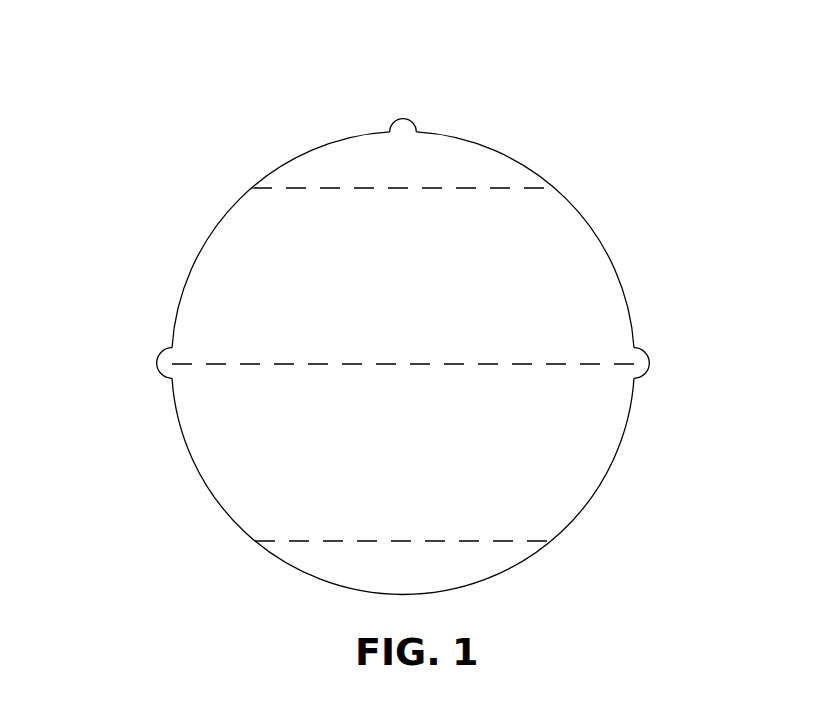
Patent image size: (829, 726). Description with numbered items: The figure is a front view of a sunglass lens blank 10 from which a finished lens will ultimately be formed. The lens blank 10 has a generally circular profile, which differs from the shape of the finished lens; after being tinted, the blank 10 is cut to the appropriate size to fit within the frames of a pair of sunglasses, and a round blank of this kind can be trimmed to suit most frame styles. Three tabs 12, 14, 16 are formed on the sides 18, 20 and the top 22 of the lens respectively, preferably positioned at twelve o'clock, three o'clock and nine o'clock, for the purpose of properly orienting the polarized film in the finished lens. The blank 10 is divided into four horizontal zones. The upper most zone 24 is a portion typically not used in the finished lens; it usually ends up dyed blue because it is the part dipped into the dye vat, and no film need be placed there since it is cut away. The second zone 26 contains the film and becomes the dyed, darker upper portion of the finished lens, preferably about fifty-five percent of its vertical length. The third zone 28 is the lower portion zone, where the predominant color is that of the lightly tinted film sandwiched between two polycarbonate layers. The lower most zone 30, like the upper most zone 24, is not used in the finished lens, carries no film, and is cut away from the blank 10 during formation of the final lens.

The sunglass lens blank 10 is at (660, 190).
The tab 12 is at (153, 375).
The tab 14 is at (390, 123).
The tab 16 is at (655, 350).
The side 18 is at (138, 327).
The side 20 is at (680, 378).
The top 22 is at (468, 125).
The upper most zone 24 is at (426, 171).
The second zone 26 is at (424, 284).
The third zone 28 is at (424, 449).
The lower most zone 30 is at (426, 579).